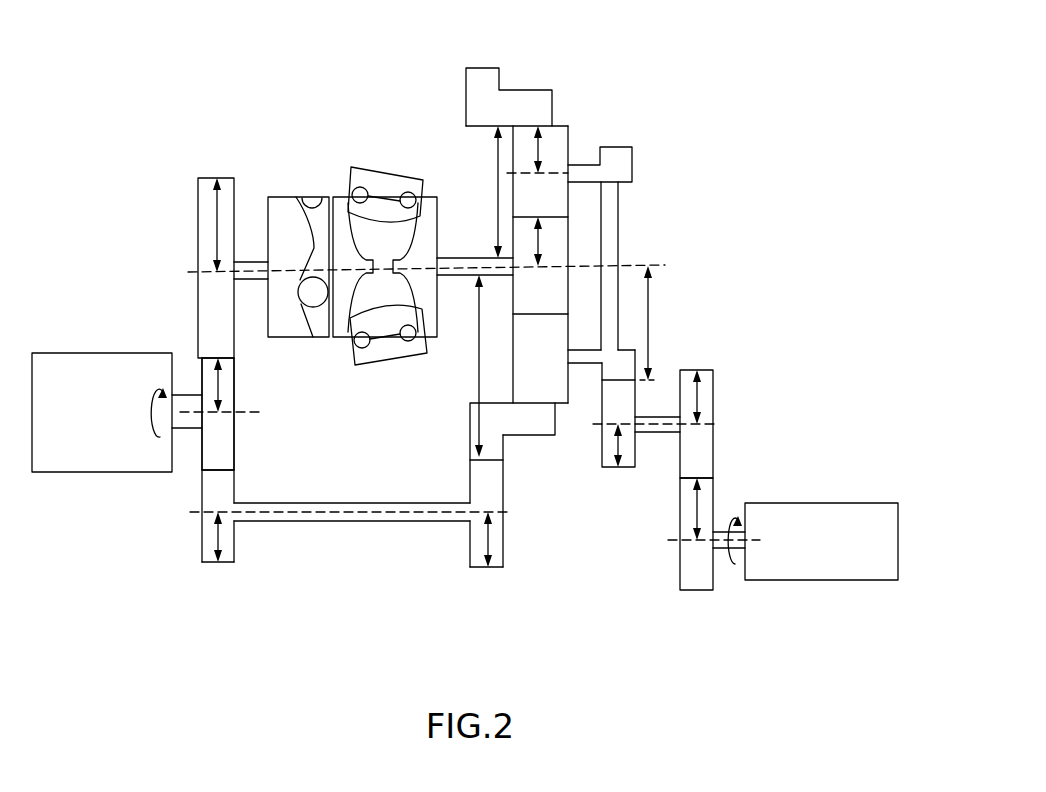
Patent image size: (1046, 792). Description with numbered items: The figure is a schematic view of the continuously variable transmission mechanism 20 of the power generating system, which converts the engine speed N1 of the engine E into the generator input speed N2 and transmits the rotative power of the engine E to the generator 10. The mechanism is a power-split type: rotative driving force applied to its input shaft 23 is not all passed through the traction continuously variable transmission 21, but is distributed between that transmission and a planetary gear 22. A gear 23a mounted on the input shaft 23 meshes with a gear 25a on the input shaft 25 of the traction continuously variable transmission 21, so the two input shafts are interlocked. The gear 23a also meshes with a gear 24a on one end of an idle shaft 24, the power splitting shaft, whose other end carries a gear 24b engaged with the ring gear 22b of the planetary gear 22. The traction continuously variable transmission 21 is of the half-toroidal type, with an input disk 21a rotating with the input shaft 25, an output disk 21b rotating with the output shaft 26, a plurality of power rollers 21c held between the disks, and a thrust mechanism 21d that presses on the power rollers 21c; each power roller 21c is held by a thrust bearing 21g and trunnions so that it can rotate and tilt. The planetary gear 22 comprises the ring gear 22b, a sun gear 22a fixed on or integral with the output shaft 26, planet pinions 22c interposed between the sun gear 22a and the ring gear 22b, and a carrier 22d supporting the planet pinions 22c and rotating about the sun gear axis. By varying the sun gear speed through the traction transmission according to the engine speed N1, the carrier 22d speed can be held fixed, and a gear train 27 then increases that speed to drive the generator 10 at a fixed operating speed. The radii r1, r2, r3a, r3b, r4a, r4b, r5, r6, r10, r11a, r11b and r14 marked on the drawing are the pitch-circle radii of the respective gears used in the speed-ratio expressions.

The continuously variable transmission mechanism 20 is at (688, 90).
The generator 10 is at (823, 503).
The engine E is at (95, 352).
The engine speed N1 is at (151, 431).
The generator input speed N2 is at (733, 568).
The traction continuously variable transmission 21 is at (378, 245).
The input disk 21a is at (340, 195).
The output disk 21b is at (439, 302).
The power rollers 21c is at (400, 222).
The thrust mechanism 21d is at (302, 186).
The thrust bearing 21g is at (407, 165).
The planetary gear 22 is at (584, 110).
The sun gear 22a is at (570, 233).
The ring gear 22b is at (537, 440).
The planet pinions 22c is at (572, 134).
The carrier 22d is at (633, 165).
The input shaft 23 is at (201, 398).
The gear 23a is at (236, 412).
The idle shaft 24 is at (360, 550).
The gear 24a is at (202, 547).
The gear 24b is at (504, 543).
The input shaft 25 is at (250, 261).
The gear 25a is at (213, 178).
The output shaft 26 is at (462, 257).
The gear train 27 is at (659, 458).
The pitch circle radius r1 is at (220, 385).
The pitch circle radius r2 is at (216, 226).
The pitch circle radius r3a is at (236, 547).
The pitch circle radius r3b is at (472, 547).
The pitch circle radius r4a is at (454, 366).
The pitch circle radius r4b is at (497, 158).
The pitch circle radius r5 is at (530, 266).
The pitch circle radius r6 is at (530, 173).
The pitch circle radius r10 is at (652, 324).
The pitch circle radius r11a is at (617, 450).
The pitch circle radius r11b is at (702, 398).
The pitch circle radius r14 is at (680, 541).